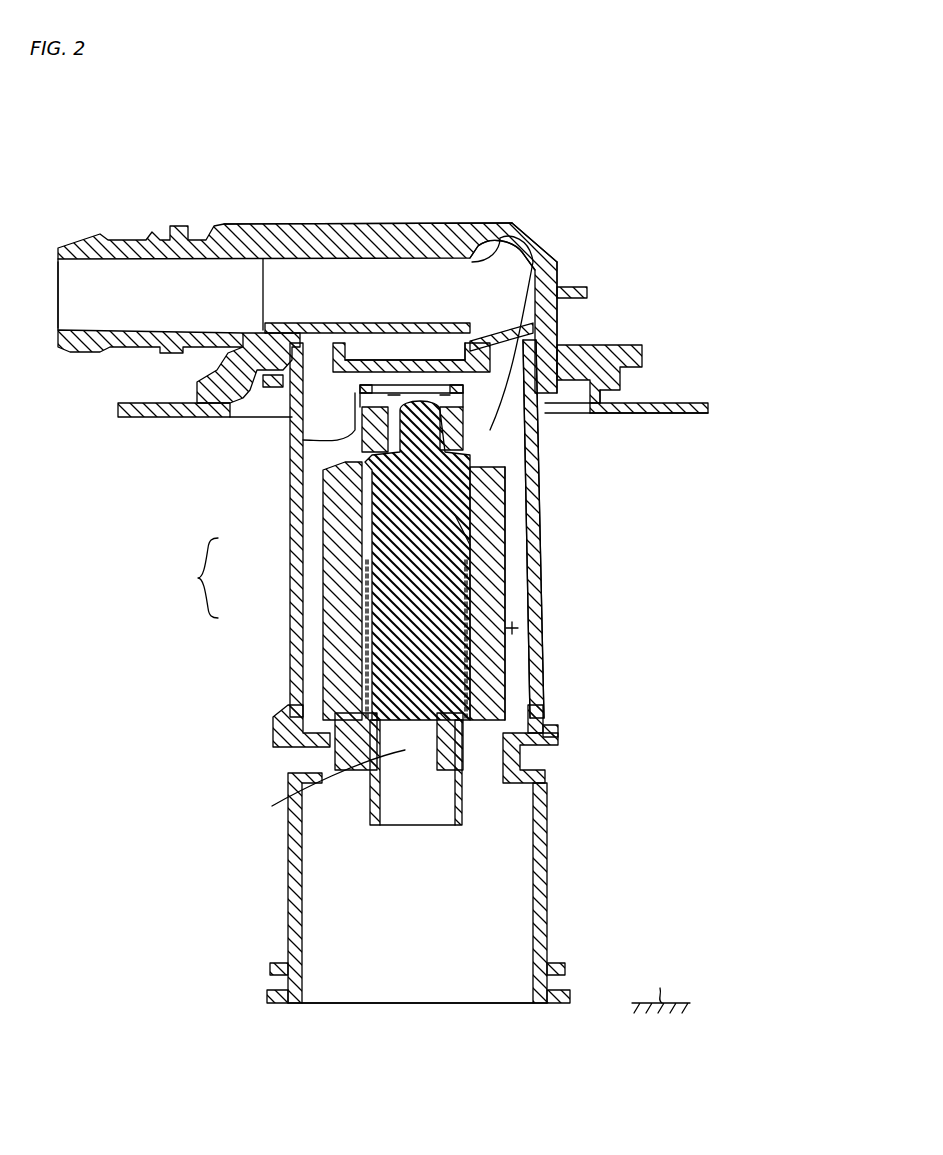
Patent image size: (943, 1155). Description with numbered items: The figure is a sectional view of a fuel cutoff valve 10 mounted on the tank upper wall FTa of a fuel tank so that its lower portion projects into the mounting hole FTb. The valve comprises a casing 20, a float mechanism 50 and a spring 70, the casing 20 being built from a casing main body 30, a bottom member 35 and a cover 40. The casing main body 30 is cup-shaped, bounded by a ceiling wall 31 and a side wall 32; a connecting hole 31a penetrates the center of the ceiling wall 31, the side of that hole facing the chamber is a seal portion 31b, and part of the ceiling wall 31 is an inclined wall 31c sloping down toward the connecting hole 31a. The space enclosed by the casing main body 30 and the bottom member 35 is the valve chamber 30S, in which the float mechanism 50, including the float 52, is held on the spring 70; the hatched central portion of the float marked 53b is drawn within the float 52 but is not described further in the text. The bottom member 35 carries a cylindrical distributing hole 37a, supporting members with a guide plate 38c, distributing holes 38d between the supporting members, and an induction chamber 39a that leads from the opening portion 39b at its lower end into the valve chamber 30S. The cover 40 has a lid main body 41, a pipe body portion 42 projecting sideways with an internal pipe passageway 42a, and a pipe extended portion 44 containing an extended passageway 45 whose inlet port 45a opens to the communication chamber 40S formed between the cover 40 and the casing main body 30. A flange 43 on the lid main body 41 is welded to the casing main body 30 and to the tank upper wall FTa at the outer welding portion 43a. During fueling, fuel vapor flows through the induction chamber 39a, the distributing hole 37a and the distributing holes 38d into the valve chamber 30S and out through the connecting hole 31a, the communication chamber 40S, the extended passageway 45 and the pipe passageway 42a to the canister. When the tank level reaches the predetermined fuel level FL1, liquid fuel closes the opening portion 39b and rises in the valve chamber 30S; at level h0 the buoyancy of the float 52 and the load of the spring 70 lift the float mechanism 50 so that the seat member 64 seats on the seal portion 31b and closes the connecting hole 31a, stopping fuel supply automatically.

The fuel cutoff valve 10 is at (585, 186).
The casing 20 is at (191, 578).
The casing main body 30 is at (288, 574).
The valve chamber 30S is at (512, 485).
The ceiling wall 31 is at (340, 330).
The connecting hole 31a is at (395, 350).
The seal portion 31b is at (443, 352).
The inclined wall 31c is at (357, 342).
The side wall 32 is at (542, 598).
The bottom member 35 is at (300, 740).
The distributing hole 37a is at (410, 740).
The guide plate 38c is at (400, 770).
The distributing holes 38d is at (488, 745).
The induction chamber 39a is at (418, 888).
The opening portion 39b is at (450, 1004).
The cover 40 is at (255, 375).
The communication chamber 40S is at (514, 226).
The lid main body 41 is at (572, 330).
The pipe body portion 42 is at (130, 240).
The pipe passageway 42a is at (125, 295).
The flange 43 is at (600, 346).
The outer welding portion 43a is at (628, 397).
The pipe extended portion 44 is at (492, 270).
The extended passageway 45 is at (338, 268).
The inlet port 45a is at (490, 268).
The float mechanism 50 is at (512, 552).
The float 52 is at (500, 570).
The valve core 53b is at (470, 650).
The seat member 64 is at (548, 300).
The spring 70 is at (465, 690).
The level h0 is at (522, 628).
The tank upper wall FTa is at (675, 420).
The mounting hole FTb is at (585, 413).
The predetermined fuel level FL1 is at (661, 988).